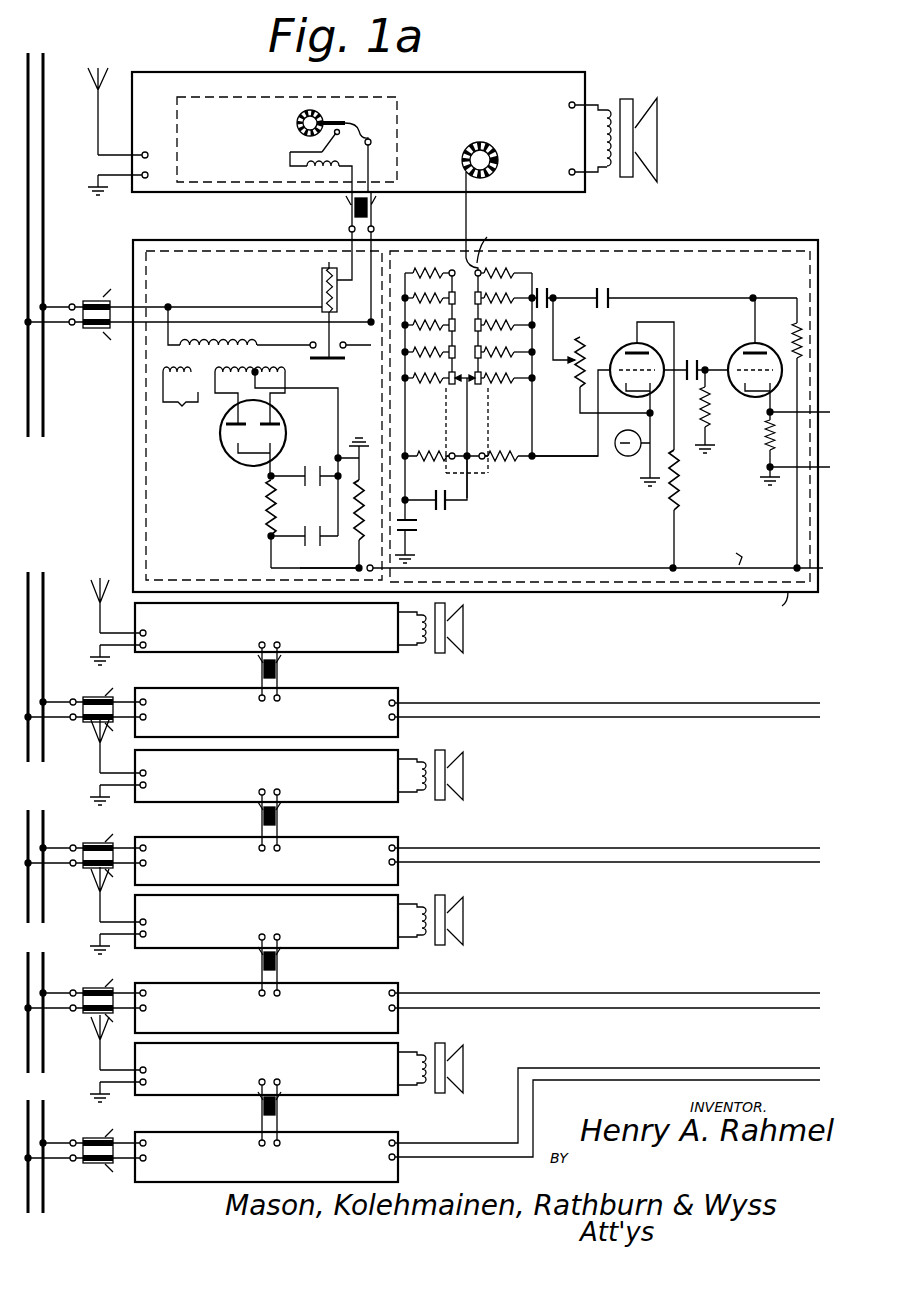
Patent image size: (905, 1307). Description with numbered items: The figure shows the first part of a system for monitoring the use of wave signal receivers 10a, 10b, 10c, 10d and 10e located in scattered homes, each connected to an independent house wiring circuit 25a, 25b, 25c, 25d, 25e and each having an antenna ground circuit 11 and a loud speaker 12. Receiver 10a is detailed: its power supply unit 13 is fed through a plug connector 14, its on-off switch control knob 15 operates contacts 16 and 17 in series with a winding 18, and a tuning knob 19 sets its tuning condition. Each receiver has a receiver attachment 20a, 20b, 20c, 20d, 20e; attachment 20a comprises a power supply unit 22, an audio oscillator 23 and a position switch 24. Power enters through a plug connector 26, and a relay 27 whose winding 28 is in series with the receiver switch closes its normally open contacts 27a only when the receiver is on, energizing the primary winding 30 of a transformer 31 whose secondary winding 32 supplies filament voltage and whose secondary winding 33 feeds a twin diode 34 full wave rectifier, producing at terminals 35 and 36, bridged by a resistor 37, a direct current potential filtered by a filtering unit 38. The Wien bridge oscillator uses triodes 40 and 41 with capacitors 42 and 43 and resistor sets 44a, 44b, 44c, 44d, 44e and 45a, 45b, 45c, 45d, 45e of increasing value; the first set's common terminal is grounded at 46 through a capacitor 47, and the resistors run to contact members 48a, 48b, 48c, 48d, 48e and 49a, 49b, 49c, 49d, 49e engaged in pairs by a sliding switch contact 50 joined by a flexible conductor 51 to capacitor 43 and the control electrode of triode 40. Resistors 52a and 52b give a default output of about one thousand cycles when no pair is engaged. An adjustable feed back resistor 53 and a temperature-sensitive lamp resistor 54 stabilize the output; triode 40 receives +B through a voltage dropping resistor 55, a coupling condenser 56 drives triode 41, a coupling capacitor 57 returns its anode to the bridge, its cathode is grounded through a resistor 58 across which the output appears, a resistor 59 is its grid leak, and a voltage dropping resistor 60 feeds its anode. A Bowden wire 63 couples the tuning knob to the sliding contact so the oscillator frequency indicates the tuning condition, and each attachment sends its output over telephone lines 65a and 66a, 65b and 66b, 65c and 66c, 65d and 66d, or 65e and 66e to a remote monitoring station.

The wave signal receiver 10a is at (585, 80).
The wave signal receiver 10b is at (205, 652).
The wave signal receiver 10c is at (205, 802).
The wave signal receiver 10d is at (205, 948).
The wave signal receiver 10e is at (205, 1095).
The antenna ground circuit 11 is at (96, 161).
The loud speaker 12 is at (640, 125).
The power supply unit 13 is at (177, 100).
The plug connector 14 is at (346, 215).
The on-off switch control knob 15 is at (304, 129).
The switch contact 16 is at (342, 104).
The switch contact 17 is at (336, 139).
The winding 18 is at (299, 167).
The tuning knob 19 is at (490, 148).
The receiver attachment 20a is at (133, 450).
The receiver attachment 20b is at (327, 687).
The receiver attachment 20c is at (379, 831).
The receiver attachment 20d is at (382, 977).
The receiver attachment 20e is at (422, 1115).
The power supply unit 22 is at (232, 232).
The audio oscillator 23 is at (762, 249).
The position switch 24 is at (454, 269).
The house wiring circuit 25a is at (40, 396).
The house wiring circuit 25b is at (44, 600).
The house wiring circuit 25c is at (44, 916).
The house wiring circuit 25d is at (44, 1064).
The house wiring circuit 25e is at (44, 1212).
The plug connector 26 is at (96, 303).
The relay 27 is at (322, 267).
The relay contacts 27a is at (330, 346).
The relay winding 28 is at (320, 287).
The primary winding 30 is at (235, 341).
The transformer 31 is at (163, 367).
The secondary winding 32 is at (166, 376).
The secondary winding 33 is at (283, 372).
The twin diode 34 is at (218, 434).
The terminal 35 is at (354, 454).
The terminal 36 is at (357, 563).
The resistor 37 is at (356, 507).
The filtering unit 38 is at (291, 520).
The triode 40 is at (624, 351).
The triode 41 is at (749, 353).
The capacitor 42 is at (549, 292).
The capacitor 43 is at (448, 513).
The resistor 44a is at (402, 265).
The resistor 44b is at (402, 289).
The resistor 44c is at (402, 316).
The resistor 44d is at (402, 343).
The resistor 44e is at (402, 369).
The resistor 45a is at (528, 265).
The resistor 45b is at (524, 289).
The resistor 45c is at (524, 316).
The resistor 45d is at (524, 343).
The resistor 45e is at (524, 369).
The ground 46 is at (414, 559).
The capacitor 47 is at (418, 525).
The contact member 48a is at (431, 264).
The contact member 48b is at (432, 291).
The contact member 48c is at (431, 318).
The contact member 48d is at (432, 345).
The contact member 48e is at (432, 371).
The contact member 49a is at (497, 264).
The contact member 49b is at (493, 291).
The contact member 49c is at (493, 318).
The contact member 49d is at (493, 345).
The contact member 49e is at (493, 371).
The sliding switch contact 50 is at (452, 389).
The flexible conductor 51 is at (474, 421).
The resistor 52a is at (425, 450).
The resistor 52b is at (501, 448).
The adjustable resistor 53 is at (564, 344).
The lamp resistor 54 is at (624, 457).
The voltage dropping resistor 55 is at (676, 481).
The coupling condenser 56 is at (691, 361).
The coupling capacitor 57 is at (605, 290).
The resistor 58 is at (769, 451).
The resistor 59 is at (708, 424).
The voltage dropping resistor 60 is at (794, 346).
The Bowden wire 63 is at (464, 202).
The telephone line 65a is at (815, 409).
The telephone line 65b is at (807, 699).
The output line 65c is at (807, 843).
The output line 65d is at (807, 989).
The output line 65e is at (667, 1065).
The telephone line 66a is at (815, 464).
The telephone line 66b is at (805, 722).
The output line 66c is at (805, 867).
The output line 66d is at (756, 1012).
The output line 66e is at (671, 1081).